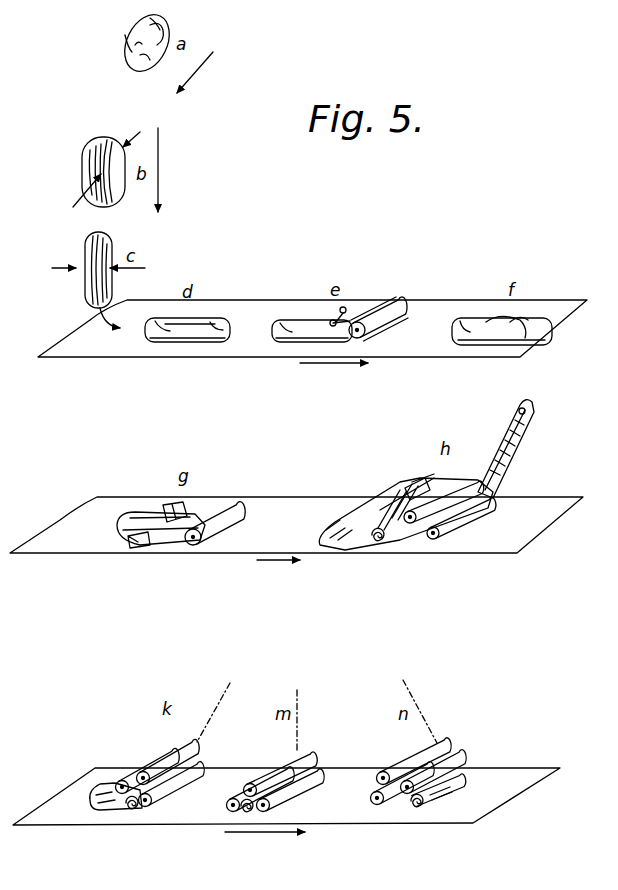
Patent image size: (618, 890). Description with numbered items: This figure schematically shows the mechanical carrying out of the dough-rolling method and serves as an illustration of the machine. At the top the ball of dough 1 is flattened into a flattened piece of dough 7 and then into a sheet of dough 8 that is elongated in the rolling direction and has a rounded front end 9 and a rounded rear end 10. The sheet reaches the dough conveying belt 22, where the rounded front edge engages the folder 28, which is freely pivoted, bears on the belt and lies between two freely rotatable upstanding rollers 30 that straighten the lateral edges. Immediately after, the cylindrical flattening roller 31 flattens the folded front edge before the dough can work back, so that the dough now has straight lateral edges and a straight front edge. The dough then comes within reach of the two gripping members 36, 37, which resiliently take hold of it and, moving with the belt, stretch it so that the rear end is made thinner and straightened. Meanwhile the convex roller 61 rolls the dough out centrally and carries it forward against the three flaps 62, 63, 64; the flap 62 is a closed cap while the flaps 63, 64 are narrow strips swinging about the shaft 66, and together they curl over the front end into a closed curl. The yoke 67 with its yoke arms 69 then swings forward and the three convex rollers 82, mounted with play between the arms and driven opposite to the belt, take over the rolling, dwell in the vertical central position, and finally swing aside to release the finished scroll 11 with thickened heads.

The ball of dough 1 is at (150, 58).
The flattened piece of dough 7 is at (84, 160).
The sheet of dough 8 is at (90, 280).
The front end 9 is at (93, 307).
The rear end 10 is at (88, 236).
The scroll 11 is at (445, 790).
The dough conveying belt 22 is at (93, 352).
The folder 28 is at (375, 300).
The upstanding rollers 30 is at (340, 310).
The cylindrical flattening roller 31 is at (423, 302).
The gripping member 36 is at (147, 537).
The gripping member 37 is at (185, 505).
The roller 61 is at (237, 507).
The flap 62 is at (343, 537).
The flap 63 is at (380, 520).
The flap 64 is at (398, 495).
The shaft 66 is at (417, 477).
The yoke 67 is at (524, 409).
The yoke arms 69 is at (502, 448).
The convex rollers 82 is at (433, 539).